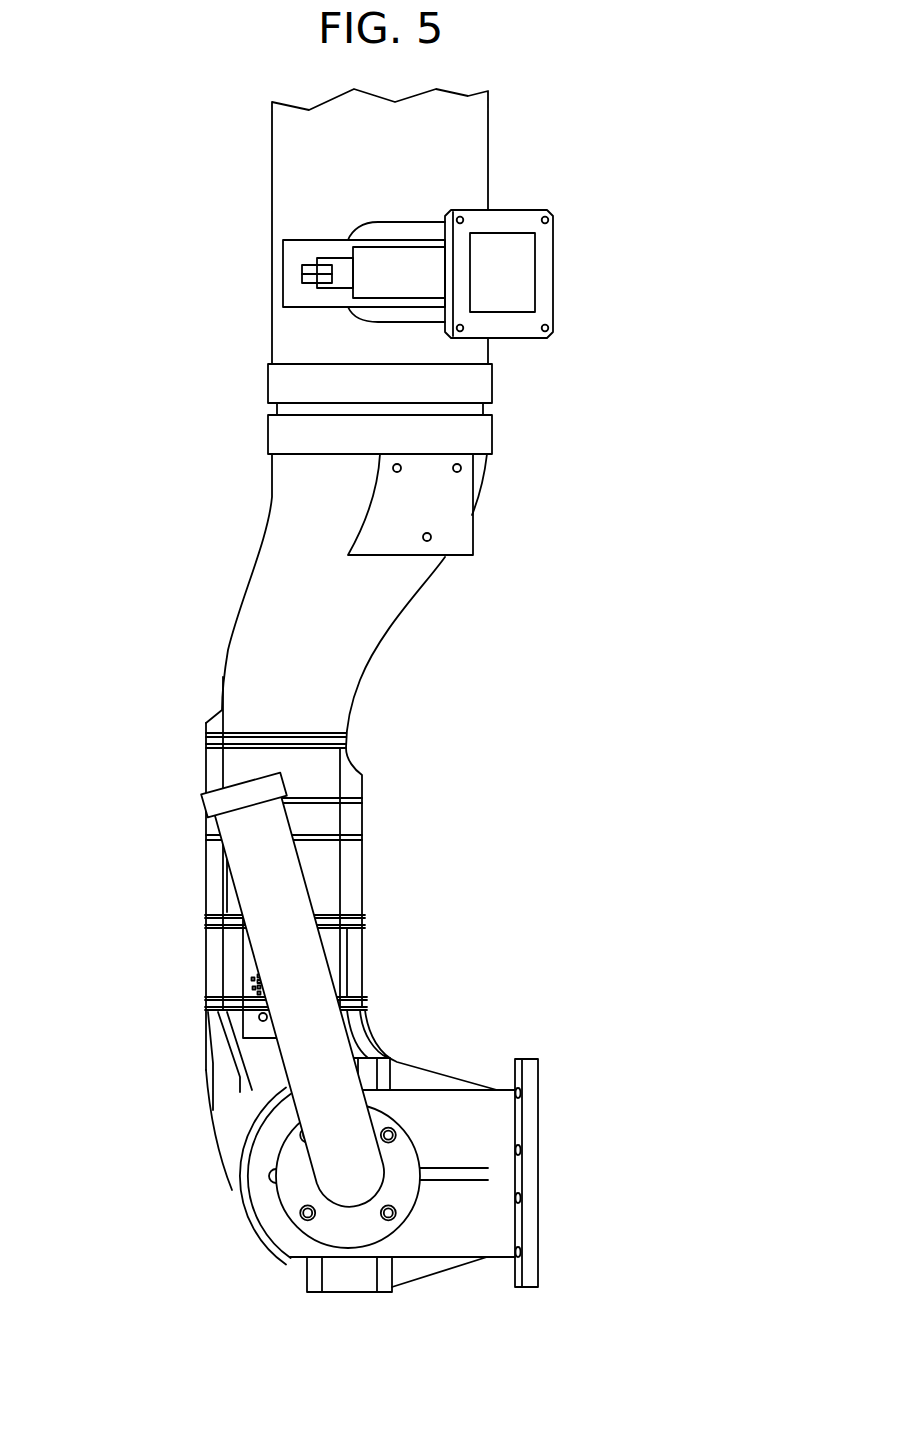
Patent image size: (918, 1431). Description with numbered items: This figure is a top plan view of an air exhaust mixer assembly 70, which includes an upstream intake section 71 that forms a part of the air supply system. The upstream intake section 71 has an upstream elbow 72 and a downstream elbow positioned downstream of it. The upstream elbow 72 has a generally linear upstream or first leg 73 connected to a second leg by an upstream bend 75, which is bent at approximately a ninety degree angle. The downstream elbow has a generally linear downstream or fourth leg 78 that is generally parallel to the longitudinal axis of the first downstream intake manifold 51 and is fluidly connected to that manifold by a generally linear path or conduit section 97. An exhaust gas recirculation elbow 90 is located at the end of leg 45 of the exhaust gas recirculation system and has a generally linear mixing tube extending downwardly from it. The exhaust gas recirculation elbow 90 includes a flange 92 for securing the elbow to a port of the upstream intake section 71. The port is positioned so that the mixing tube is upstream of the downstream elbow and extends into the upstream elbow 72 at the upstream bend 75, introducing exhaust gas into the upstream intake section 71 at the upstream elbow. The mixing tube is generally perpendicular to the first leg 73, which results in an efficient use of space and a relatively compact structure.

The first downstream intake manifold 51 is at (248, 166).
The conduit section 97 is at (273, 582).
The fourth leg 78 is at (213, 948).
The first leg 73 is at (212, 1057).
The flange 92 is at (290, 1197).
The exhaust gas recirculation elbow 90 is at (347, 1153).
The upstream bend 75 is at (258, 1185).
The leg 45 is at (320, 1035).
The upstream elbow 72 is at (385, 1247).
The upstream intake section 71 is at (182, 1153).
The air exhaust mixer assembly 70 is at (532, 932).